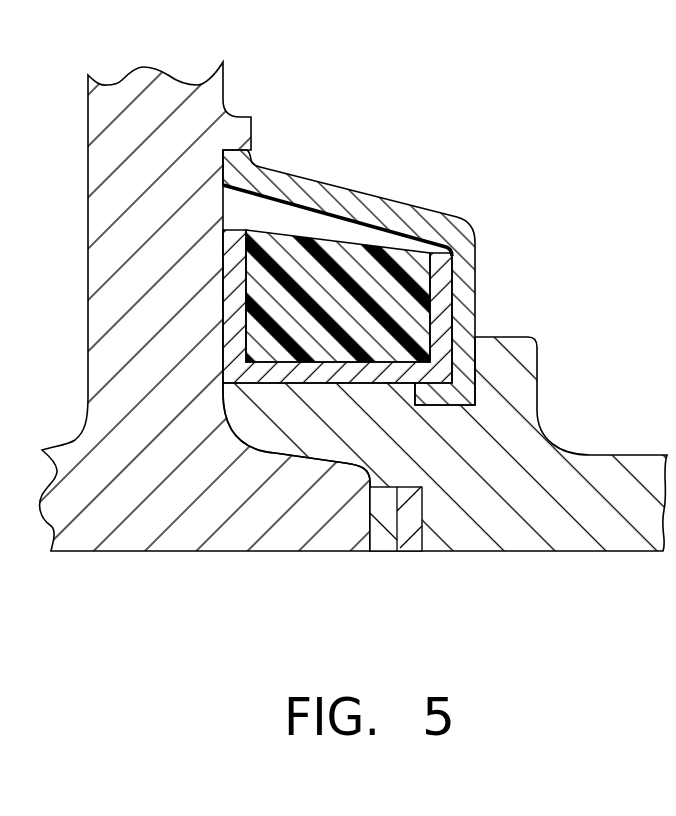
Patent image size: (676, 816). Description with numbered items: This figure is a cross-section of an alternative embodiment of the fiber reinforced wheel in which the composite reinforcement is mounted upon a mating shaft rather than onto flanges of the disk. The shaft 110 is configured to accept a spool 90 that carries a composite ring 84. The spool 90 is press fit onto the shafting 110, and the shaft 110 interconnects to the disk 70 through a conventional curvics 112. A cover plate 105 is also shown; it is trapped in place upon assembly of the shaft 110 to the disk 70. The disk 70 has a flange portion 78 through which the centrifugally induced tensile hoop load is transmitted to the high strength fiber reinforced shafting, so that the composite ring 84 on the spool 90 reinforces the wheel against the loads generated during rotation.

The disk 70 is at (205, 110).
The flange portion 78 is at (232, 537).
The composite ring 84 is at (311, 243).
The spool 90 is at (443, 290).
The cover plate 105 is at (367, 205).
The shaft 110 is at (533, 457).
The curvics 112 is at (382, 540).